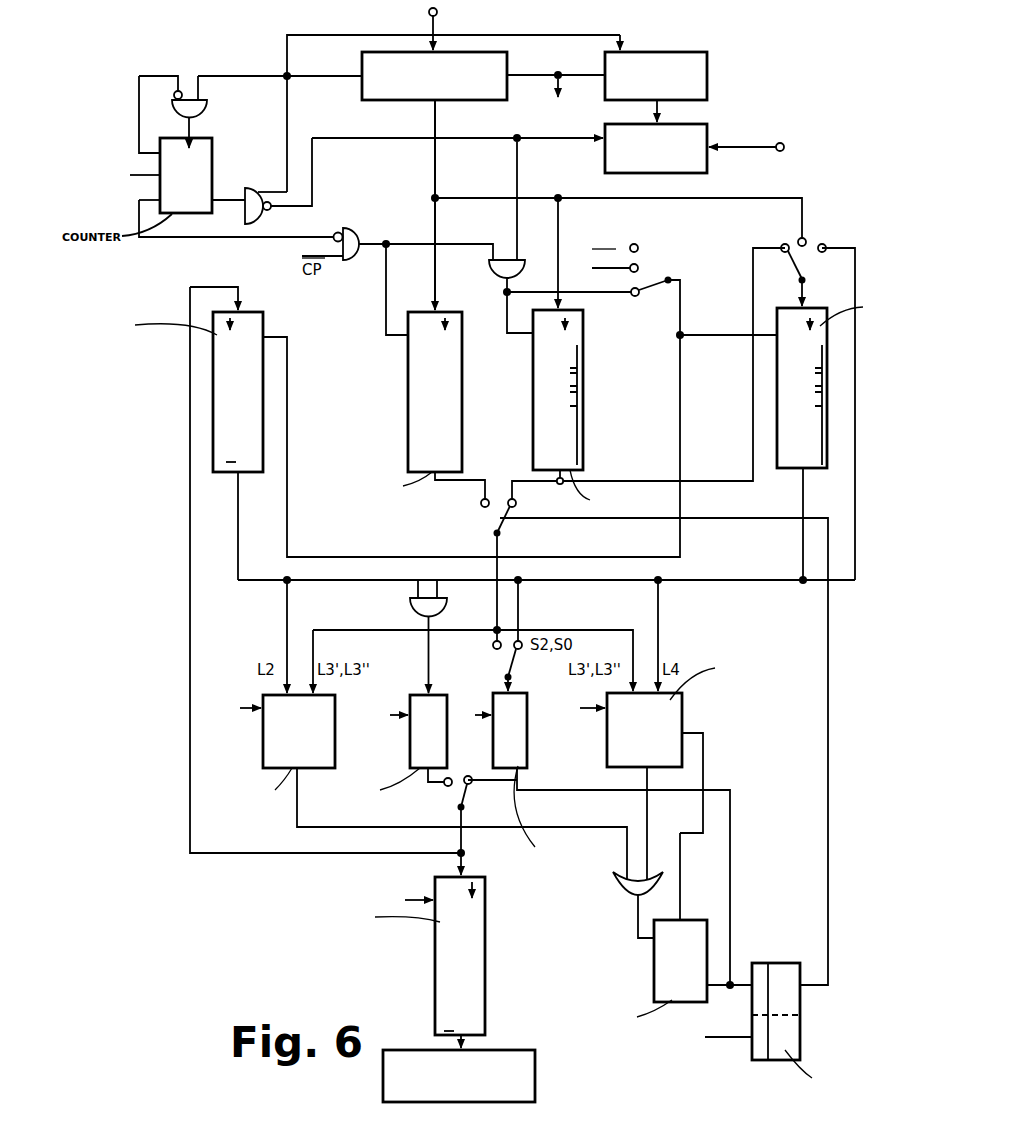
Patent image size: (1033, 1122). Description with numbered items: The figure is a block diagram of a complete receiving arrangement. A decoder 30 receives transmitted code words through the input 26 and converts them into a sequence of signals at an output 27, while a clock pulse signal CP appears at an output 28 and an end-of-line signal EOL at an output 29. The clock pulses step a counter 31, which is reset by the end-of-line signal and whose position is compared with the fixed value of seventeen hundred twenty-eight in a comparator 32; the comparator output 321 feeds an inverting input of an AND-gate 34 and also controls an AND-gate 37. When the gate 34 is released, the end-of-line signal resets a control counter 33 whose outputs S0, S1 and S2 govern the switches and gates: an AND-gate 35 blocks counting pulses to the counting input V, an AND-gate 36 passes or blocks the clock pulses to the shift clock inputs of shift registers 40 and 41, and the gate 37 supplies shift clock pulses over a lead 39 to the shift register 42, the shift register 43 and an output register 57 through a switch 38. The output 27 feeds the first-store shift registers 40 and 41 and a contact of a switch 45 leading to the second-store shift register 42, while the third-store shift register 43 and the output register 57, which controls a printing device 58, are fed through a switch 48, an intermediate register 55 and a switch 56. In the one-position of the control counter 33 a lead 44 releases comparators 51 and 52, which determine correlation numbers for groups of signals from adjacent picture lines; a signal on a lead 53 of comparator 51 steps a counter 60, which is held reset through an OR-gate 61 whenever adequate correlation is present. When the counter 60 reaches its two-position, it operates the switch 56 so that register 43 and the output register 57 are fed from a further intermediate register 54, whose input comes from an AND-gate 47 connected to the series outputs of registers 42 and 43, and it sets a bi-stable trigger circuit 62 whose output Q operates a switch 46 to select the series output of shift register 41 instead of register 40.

The input 26 is at (437, 18).
The output 27 is at (440, 110).
The output 28 is at (548, 70).
The output 29 is at (310, 76).
The decoder 30 is at (398, 100).
The counter 31 is at (707, 63).
The comparator 32 is at (707, 133).
The output of the comparator 321 is at (457, 185).
The control counter 33 is at (212, 163).
The AND-gate 34 is at (249, 218).
The AND-gate 35 is at (207, 108).
The AND-gate 36 is at (358, 230).
The AND-gate 37 is at (489, 268).
The switch 38 is at (684, 284).
The lead 39 is at (680, 542).
The shift register 40 is at (533, 408).
The shift register 41 is at (408, 422).
The shift register 42 is at (815, 470).
The shift register 43 is at (250, 473).
The lead 44 is at (148, 177).
The switch 45 is at (795, 268).
The switch 46 is at (500, 518).
The AND-gate 47 is at (410, 608).
The switch 48 is at (516, 666).
The comparator 51 is at (682, 712).
The comparator 52 is at (262, 733).
The lead 53 is at (707, 758).
The further intermediate register 54 is at (408, 736).
The intermediate register 55 is at (527, 745).
The switch 56 is at (459, 804).
The output register 57 is at (434, 945).
The printing device 58 is at (500, 1050).
The counter 60 is at (653, 975).
The OR-gate 61 is at (615, 888).
The bi-stable trigger circuit 62 is at (778, 963).